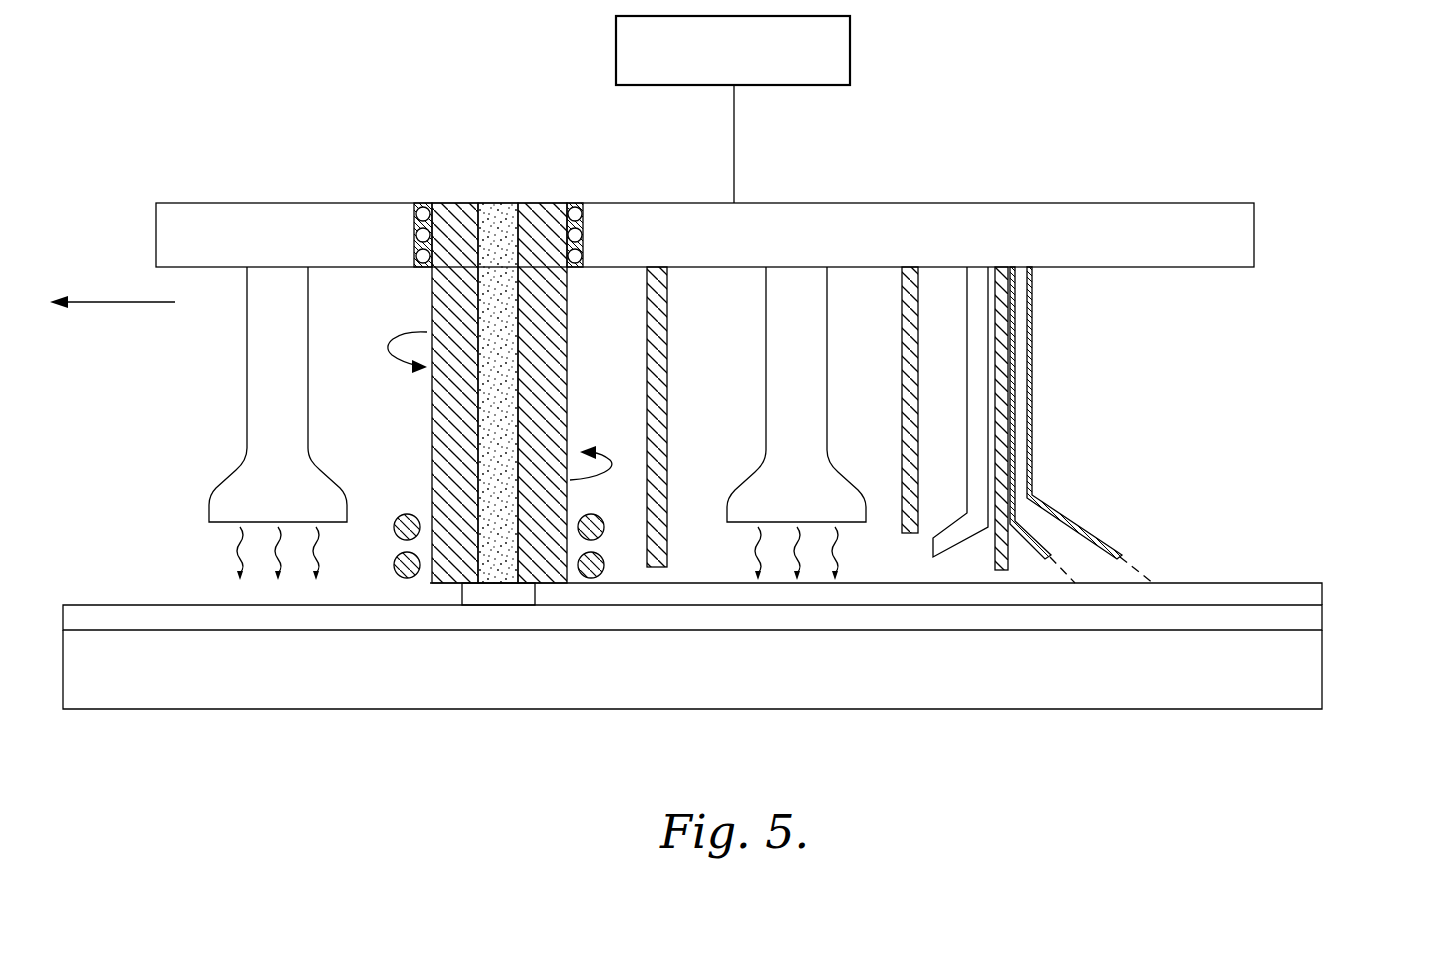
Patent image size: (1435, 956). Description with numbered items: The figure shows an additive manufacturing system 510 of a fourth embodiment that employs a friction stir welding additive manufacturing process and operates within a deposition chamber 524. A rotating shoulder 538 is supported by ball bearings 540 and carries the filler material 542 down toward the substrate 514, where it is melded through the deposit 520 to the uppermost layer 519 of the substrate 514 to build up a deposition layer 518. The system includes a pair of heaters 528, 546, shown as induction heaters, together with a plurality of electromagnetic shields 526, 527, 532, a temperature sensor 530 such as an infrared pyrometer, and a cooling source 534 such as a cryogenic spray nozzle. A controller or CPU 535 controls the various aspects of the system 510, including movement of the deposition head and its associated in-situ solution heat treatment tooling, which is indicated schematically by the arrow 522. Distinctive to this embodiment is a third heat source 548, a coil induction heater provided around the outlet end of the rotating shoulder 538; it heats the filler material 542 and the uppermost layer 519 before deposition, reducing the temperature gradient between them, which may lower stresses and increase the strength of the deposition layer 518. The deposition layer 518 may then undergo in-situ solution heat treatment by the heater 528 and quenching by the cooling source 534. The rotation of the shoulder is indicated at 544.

The additive manufacturing system 510 is at (180, 132).
The substrate 514 is at (368, 678).
The deposition layer 518 is at (1280, 592).
The uppermost layer 519 is at (1322, 617).
The deposit 520 is at (517, 592).
The arrow 522 is at (133, 302).
The deposition chamber 524 is at (1166, 120).
The electromagnetic shield 526 is at (665, 332).
The electromagnetic shield 527 is at (910, 323).
The heater 528 is at (797, 290).
The temperature sensor 530 is at (975, 290).
The electromagnetic shield 532 is at (1000, 355).
The cooling source 534 is at (1062, 520).
The controller or CPU 535 is at (845, 33).
The rotating shoulder 538 is at (553, 210).
The ball bearings 540 is at (416, 215).
The filler material 542 is at (497, 210).
The rotation direction 544 is at (593, 450).
The heater 546 is at (248, 483).
The third heat source 548 is at (597, 572).